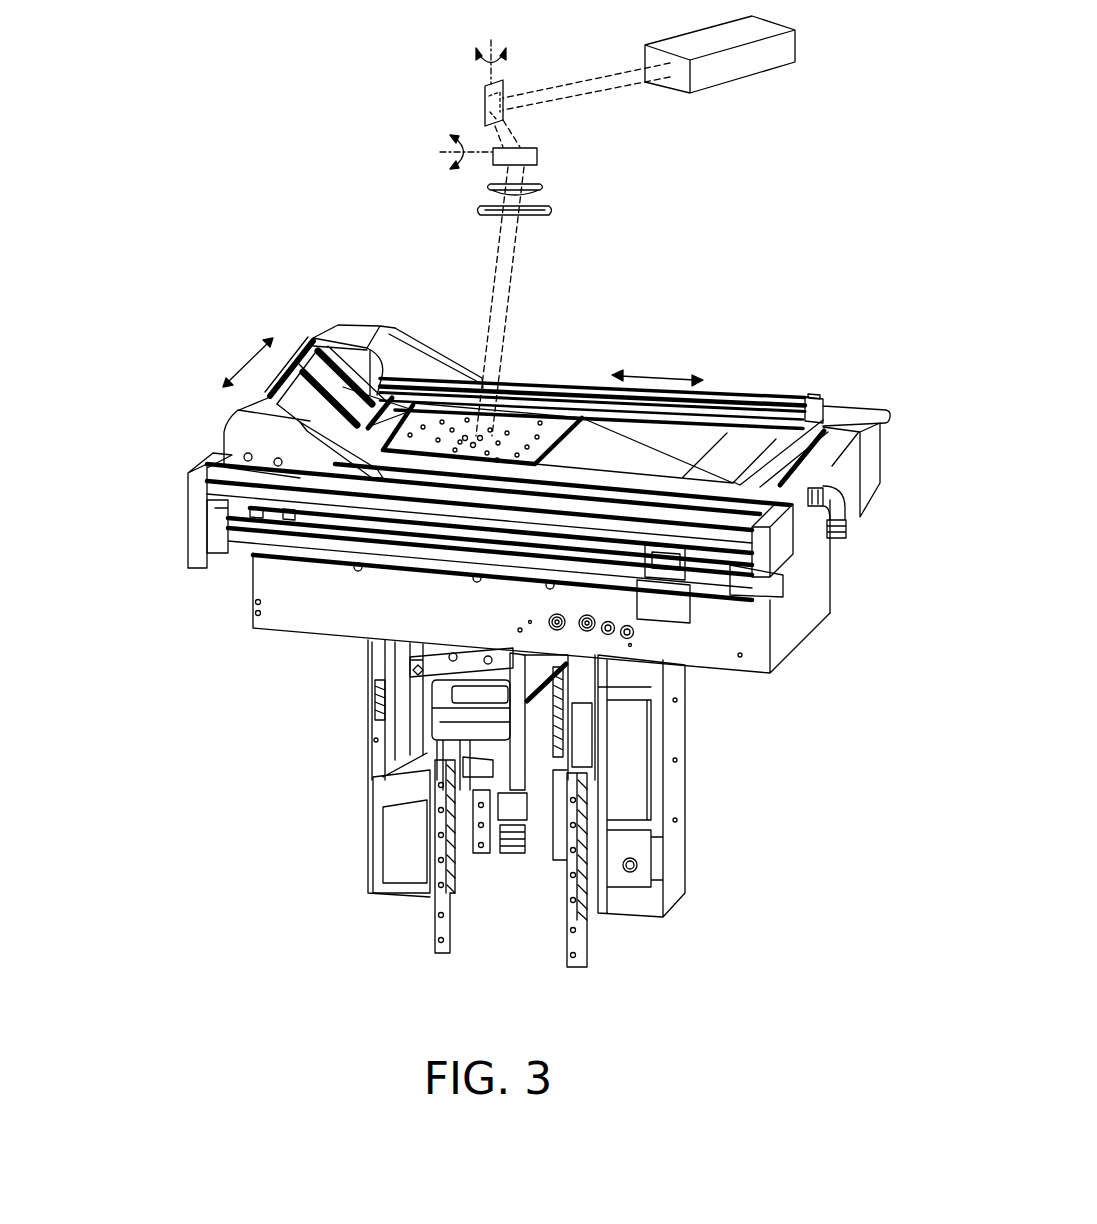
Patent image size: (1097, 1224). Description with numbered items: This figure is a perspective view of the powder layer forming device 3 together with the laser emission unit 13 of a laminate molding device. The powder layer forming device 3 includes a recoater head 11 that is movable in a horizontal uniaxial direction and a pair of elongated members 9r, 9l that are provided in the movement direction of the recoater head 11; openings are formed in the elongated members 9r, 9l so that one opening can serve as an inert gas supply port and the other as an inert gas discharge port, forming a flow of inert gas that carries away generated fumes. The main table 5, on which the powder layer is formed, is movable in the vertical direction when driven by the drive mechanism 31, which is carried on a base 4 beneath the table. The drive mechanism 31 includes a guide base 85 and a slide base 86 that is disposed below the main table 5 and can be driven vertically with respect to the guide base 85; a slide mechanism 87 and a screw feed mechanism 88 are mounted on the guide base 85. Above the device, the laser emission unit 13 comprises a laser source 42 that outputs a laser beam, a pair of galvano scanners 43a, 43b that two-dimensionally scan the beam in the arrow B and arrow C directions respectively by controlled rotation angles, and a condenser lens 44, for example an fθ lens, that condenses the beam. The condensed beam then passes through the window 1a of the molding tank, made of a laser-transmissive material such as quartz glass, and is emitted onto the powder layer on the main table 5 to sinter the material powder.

The powder layer forming device 3 is at (495, 491).
The laser emission unit 13 is at (548, 226).
The laser source 42 is at (762, 68).
The galvano scanner 43a is at (503, 82).
The galvano scanner 43b is at (493, 160).
The condenser lens 44 is at (540, 187).
The window 1a is at (552, 211).
The recoater head 11 is at (207, 398).
The main table 5 is at (523, 432).
The elongated member 9l is at (590, 470).
The elongated member 9r is at (752, 398).
The base 4 is at (267, 601).
The drive mechanism 31 is at (502, 803).
The guide base 85 is at (678, 790).
The slide base 86 is at (393, 758).
The slide mechanism 87 is at (435, 935).
The screw feed mechanism 88 is at (512, 853).